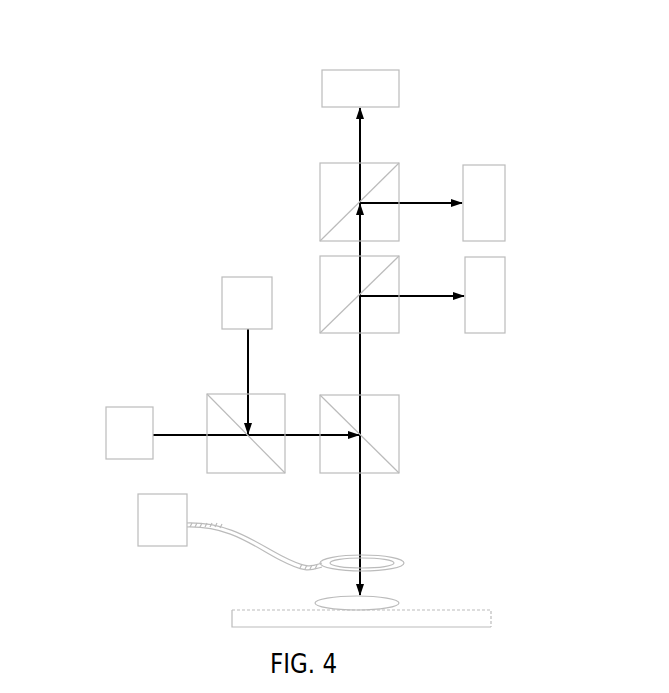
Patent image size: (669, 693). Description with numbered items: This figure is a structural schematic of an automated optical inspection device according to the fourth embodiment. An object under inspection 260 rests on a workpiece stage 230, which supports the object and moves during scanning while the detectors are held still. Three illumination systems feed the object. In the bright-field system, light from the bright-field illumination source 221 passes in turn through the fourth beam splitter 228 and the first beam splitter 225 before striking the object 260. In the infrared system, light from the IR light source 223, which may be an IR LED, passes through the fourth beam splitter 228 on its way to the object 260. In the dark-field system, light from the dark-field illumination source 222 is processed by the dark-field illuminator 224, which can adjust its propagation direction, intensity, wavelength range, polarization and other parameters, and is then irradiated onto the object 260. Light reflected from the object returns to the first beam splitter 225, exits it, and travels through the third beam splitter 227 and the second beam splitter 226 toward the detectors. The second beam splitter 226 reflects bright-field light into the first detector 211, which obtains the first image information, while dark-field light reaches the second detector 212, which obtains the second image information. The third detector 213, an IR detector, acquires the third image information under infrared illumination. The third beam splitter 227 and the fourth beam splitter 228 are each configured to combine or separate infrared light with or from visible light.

The second detector 212 is at (368, 83).
The second beam splitter 226 is at (348, 193).
The first detector 211 is at (485, 203).
The third beam splitter 227 is at (337, 288).
The third detector 213 is at (487, 295).
The bright-field illumination source 221 is at (251, 299).
The IR light source 223 is at (128, 440).
The fourth beam splitter 228 is at (225, 425).
The first beam splitter 225 is at (382, 435).
The dark-field illumination source 222 is at (152, 515).
The dark-field illuminator 224 is at (401, 562).
The object under inspection 260 is at (372, 603).
The workpiece stage 230 is at (252, 618).